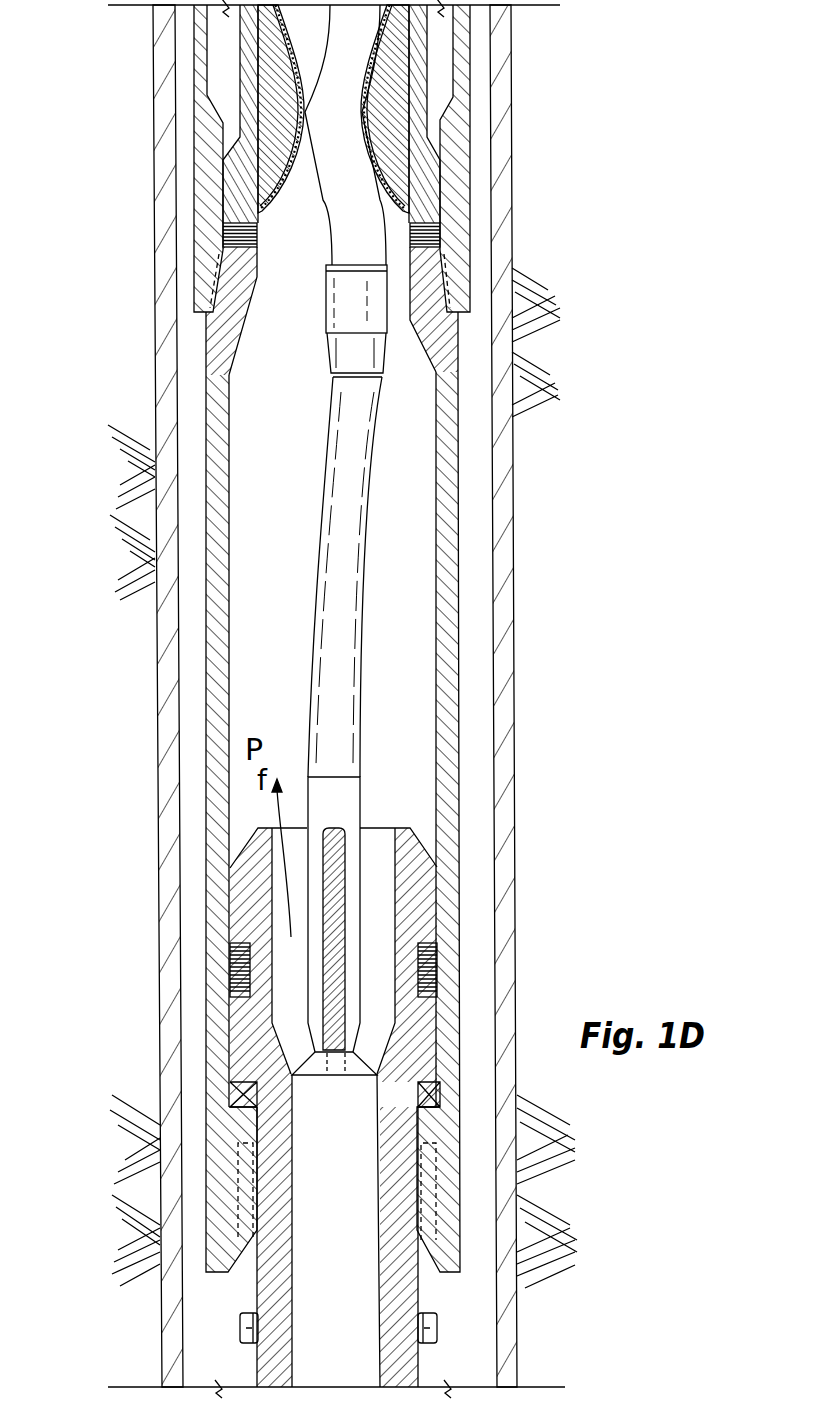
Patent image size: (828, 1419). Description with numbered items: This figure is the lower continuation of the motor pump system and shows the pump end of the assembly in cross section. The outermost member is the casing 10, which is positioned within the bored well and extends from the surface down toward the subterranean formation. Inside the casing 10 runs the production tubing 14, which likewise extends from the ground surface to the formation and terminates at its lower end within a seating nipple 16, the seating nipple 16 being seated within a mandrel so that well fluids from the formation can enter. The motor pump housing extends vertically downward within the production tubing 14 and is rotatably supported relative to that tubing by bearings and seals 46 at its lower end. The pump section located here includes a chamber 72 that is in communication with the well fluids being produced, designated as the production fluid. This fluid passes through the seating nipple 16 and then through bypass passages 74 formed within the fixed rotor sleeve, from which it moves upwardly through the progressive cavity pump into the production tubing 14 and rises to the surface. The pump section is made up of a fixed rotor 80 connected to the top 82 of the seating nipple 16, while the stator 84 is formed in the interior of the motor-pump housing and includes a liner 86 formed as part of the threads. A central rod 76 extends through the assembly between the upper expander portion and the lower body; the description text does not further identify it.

The casing 10 is at (153, 208).
The production tubing 14 is at (447, 510).
The seating nipple 16 is at (412, 1288).
The bearings and seals 46 is at (440, 246).
The chamber 72 is at (277, 275).
The bypass passages 74 is at (377, 890).
The flexible rod 76 is at (360, 400).
The fixed rotor 80 is at (357, 57).
The top of seating nipple 82 is at (247, 1042).
The stator 84 is at (400, 172).
The liner 86 is at (363, 113).